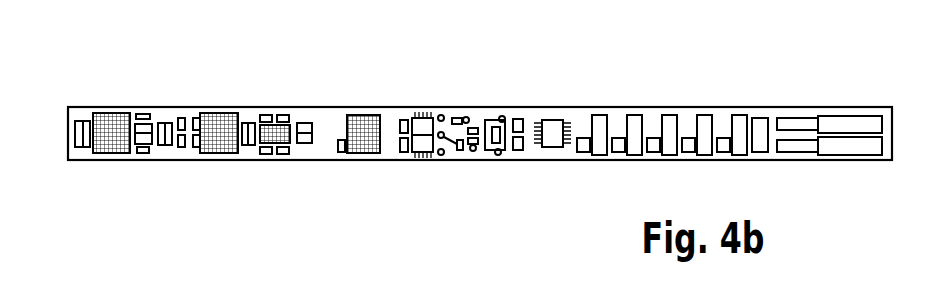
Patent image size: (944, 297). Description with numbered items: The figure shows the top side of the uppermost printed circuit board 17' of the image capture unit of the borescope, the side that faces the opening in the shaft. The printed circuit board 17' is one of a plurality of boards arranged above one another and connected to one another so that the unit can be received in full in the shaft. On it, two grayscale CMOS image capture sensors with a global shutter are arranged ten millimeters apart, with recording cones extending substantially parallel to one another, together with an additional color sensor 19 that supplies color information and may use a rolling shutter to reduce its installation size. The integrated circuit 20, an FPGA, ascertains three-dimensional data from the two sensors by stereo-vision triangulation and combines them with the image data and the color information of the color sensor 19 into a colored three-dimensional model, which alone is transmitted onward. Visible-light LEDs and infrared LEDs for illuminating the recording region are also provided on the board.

The uppermost printed circuit board 17' is at (832, 90).
The color sensor 19 is at (284, 144).
The integrated circuit 20 is at (369, 145).